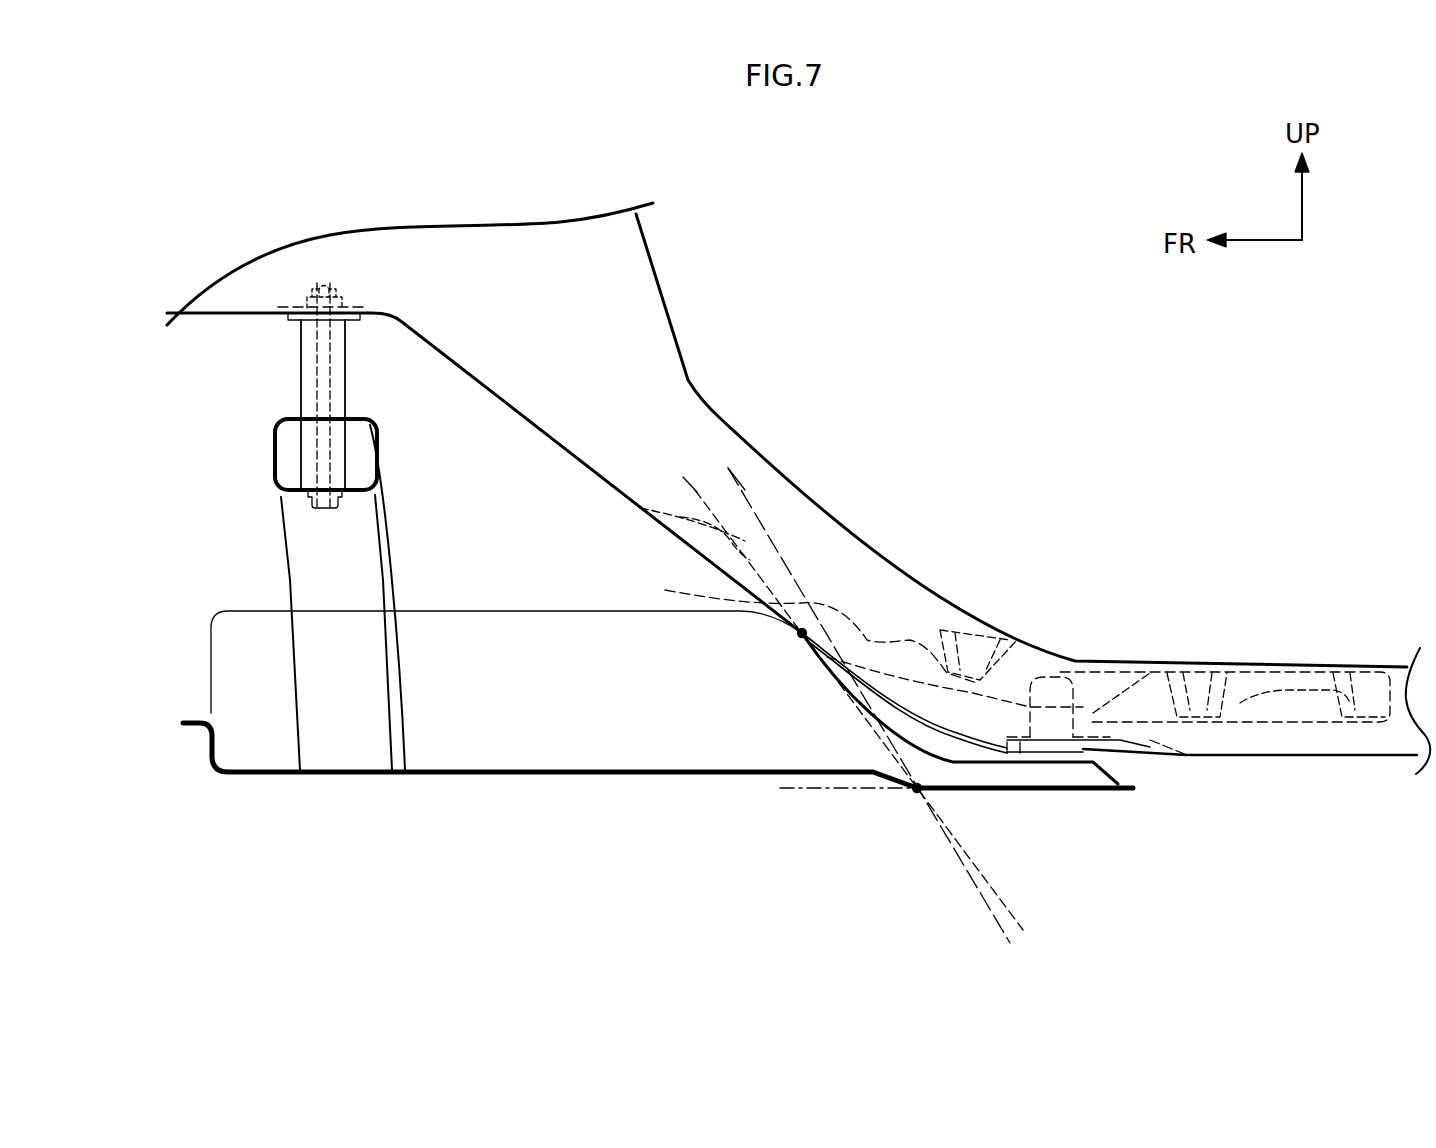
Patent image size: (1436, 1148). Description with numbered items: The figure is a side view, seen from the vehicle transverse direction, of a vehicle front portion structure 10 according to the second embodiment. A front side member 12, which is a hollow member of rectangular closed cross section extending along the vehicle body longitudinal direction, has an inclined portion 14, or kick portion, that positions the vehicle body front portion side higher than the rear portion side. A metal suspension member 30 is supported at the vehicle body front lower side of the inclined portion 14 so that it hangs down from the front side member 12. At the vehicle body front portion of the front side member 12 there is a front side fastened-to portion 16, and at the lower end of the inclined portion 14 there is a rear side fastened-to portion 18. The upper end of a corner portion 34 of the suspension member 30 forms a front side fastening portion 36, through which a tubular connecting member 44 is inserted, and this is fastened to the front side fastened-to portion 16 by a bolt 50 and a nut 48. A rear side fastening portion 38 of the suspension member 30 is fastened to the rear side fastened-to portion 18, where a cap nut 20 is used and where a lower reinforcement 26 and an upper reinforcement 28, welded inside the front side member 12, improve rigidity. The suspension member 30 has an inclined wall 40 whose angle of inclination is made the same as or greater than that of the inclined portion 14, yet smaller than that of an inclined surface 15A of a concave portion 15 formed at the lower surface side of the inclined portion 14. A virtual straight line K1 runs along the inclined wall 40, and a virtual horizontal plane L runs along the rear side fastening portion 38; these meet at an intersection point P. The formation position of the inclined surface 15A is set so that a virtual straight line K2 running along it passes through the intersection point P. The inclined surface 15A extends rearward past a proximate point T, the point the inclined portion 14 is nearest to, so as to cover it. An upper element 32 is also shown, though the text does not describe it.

The vehicle front portion structure 10 is at (555, 531).
The front side member 12 is at (378, 318).
The inclined portion 14 is at (712, 400).
The concave portion 15 is at (754, 541).
The inclined surface 15A is at (796, 629).
The front side fastened-to portion 16 is at (290, 317).
The rear side fastened-to portion 18 is at (1090, 750).
The cap nut 20 is at (1052, 680).
The lower reinforcement 26 is at (1127, 727).
The upper reinforcement 28 is at (1083, 743).
The suspension member 30 is at (600, 776).
The frame member 32 is at (468, 609).
The corner portion 34 is at (290, 546).
The front side fastening portion 36 is at (300, 420).
The rear side fastening portion 38 is at (1100, 773).
The inclined wall 40 is at (845, 672).
The connecting member 44 is at (350, 396).
The nut 48 is at (340, 289).
The bolt 50 is at (321, 502).
The virtual straight line K1 is at (703, 480).
The virtual straight line K2 is at (745, 480).
The virtual horizontal plane L is at (840, 793).
The intersection point P is at (914, 793).
The proximate point T is at (797, 636).